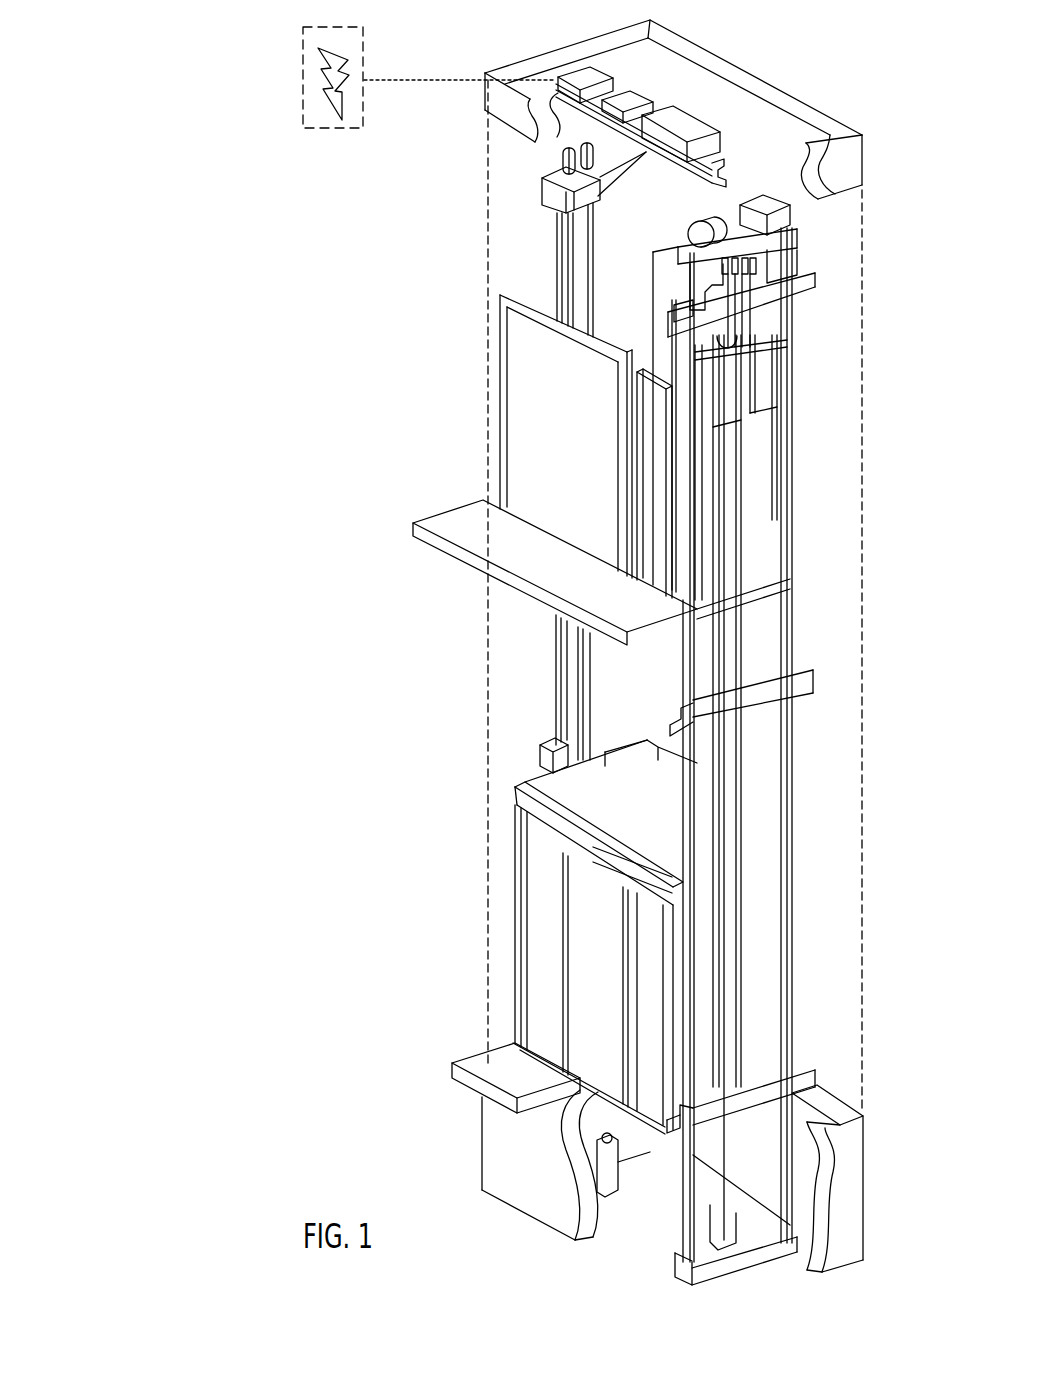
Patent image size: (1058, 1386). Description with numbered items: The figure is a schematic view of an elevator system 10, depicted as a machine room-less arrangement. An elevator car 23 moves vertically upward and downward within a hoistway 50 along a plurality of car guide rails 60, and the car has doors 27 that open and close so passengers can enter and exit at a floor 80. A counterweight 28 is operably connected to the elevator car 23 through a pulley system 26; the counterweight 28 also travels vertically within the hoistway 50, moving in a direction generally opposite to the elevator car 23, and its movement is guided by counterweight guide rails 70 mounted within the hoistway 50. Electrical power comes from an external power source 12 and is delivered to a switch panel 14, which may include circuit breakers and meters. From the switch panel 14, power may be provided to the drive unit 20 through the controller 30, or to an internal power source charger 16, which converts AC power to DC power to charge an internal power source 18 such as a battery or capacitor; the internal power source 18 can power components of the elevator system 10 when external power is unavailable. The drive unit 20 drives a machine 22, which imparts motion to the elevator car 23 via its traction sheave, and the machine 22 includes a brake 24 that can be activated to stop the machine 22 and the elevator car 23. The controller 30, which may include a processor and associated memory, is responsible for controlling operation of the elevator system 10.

The elevator system 10 is at (122, 186).
The power source 12 is at (302, 91).
The switch panel 14 is at (590, 78).
The internal power source charger 16 is at (556, 137).
The internal power source 18 is at (697, 130).
The drive unit 20 is at (773, 197).
The machine 22 is at (773, 220).
The elevator car 23 is at (753, 857).
The brake 24 is at (692, 236).
The pulley system 26 is at (745, 312).
The doors 27 is at (617, 991).
The counterweight 28 is at (762, 473).
The controller 30 is at (650, 488).
The hoistway 50 is at (482, 245).
The car guide rails 60 is at (730, 758).
The counterweight guide rails 70 is at (785, 618).
The floor 80 is at (500, 1075).